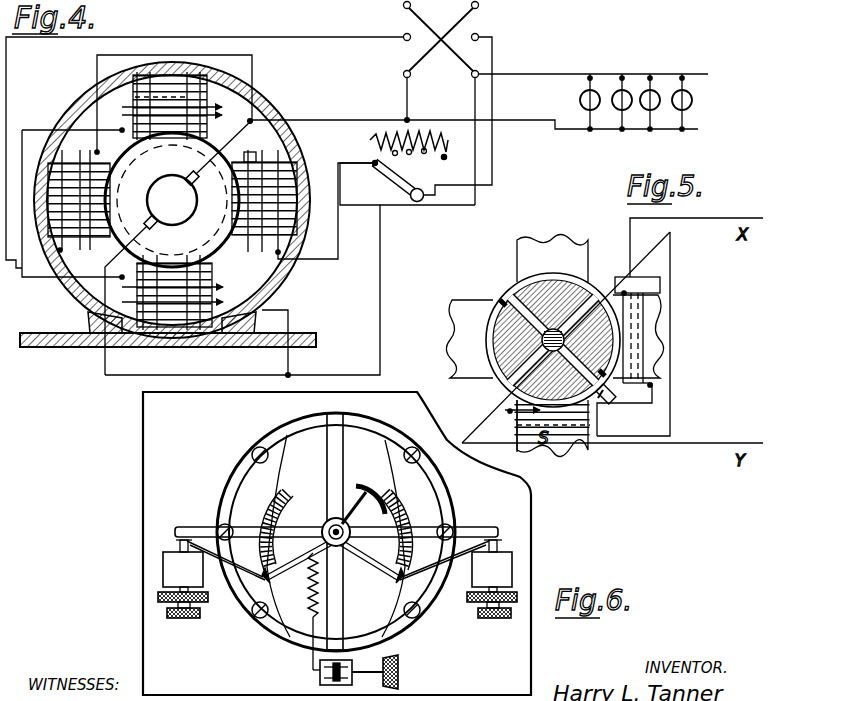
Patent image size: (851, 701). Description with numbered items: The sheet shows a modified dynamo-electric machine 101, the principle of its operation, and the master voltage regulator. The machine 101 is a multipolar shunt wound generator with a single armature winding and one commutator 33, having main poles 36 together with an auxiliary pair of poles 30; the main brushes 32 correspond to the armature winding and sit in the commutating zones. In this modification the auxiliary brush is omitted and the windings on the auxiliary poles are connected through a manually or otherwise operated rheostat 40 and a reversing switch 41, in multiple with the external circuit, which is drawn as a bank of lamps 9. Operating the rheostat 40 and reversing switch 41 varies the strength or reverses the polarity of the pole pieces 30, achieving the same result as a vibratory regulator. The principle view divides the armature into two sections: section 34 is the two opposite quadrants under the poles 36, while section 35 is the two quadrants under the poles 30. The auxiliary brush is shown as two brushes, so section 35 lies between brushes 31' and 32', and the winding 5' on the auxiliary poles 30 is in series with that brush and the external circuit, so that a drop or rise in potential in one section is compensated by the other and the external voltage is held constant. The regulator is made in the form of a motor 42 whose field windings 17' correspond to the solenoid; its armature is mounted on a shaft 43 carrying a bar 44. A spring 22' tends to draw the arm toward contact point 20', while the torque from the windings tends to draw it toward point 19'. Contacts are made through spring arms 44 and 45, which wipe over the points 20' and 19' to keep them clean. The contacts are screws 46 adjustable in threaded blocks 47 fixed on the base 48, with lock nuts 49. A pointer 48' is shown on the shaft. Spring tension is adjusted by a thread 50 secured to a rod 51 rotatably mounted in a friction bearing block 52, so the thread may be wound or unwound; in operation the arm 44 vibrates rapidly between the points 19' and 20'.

In FIG. 4, the dynamo-electric machine 101 is at (283, 106).
In FIG. 4, the commutator 33 is at (172, 200).
In FIG. 4, the main brushes 32 is at (178, 247).
In FIG. 4, the main poles 36 is at (140, 98).
In FIG. 5, the main poles 36 is at (522, 258).
In FIG. 4, the auxiliary poles 30 is at (279, 164).
In FIG. 5, the auxiliary poles 30 is at (562, 336).
In FIG. 4, the reversing switch 41 is at (478, 37).
In FIG. 4, the lamps 9 is at (624, 78).
In FIG. 4, the rheostat 40 is at (397, 160).
In FIG. 5, the armature section 34 is at (607, 296).
In FIG. 5, the armature section 35 is at (503, 301).
In FIG. 5, the brush 32' is at (559, 364).
In FIG. 5, the winding 5' is at (632, 356).
In FIG. 5, the brush 31' is at (618, 403).
In FIG. 6, the base 48 is at (319, 543).
In FIG. 6, the motor 42 is at (264, 441).
In FIG. 6, the field windings 17' is at (335, 536).
In FIG. 6, the thread 50 is at (313, 627).
In FIG. 6, the bar 44 is at (468, 531).
In FIG. 6, the spring arm 45 is at (408, 570).
In FIG. 6, the shaft 43 is at (342, 541).
In FIG. 6, the pointer 48' is at (363, 506).
In FIG. 6, the spring 22' is at (302, 585).
In FIG. 6, the threaded blocks 47 is at (337, 563).
In FIG. 6, the lock nuts 49 is at (202, 600).
In FIG. 6, the screws 46 is at (184, 619).
In FIG. 6, the contact point 20' is at (170, 544).
In FIG. 6, the contact point 19' is at (505, 543).
In FIG. 6, the friction bearing block 52 is at (322, 682).
In FIG. 6, the rod 51 is at (374, 673).